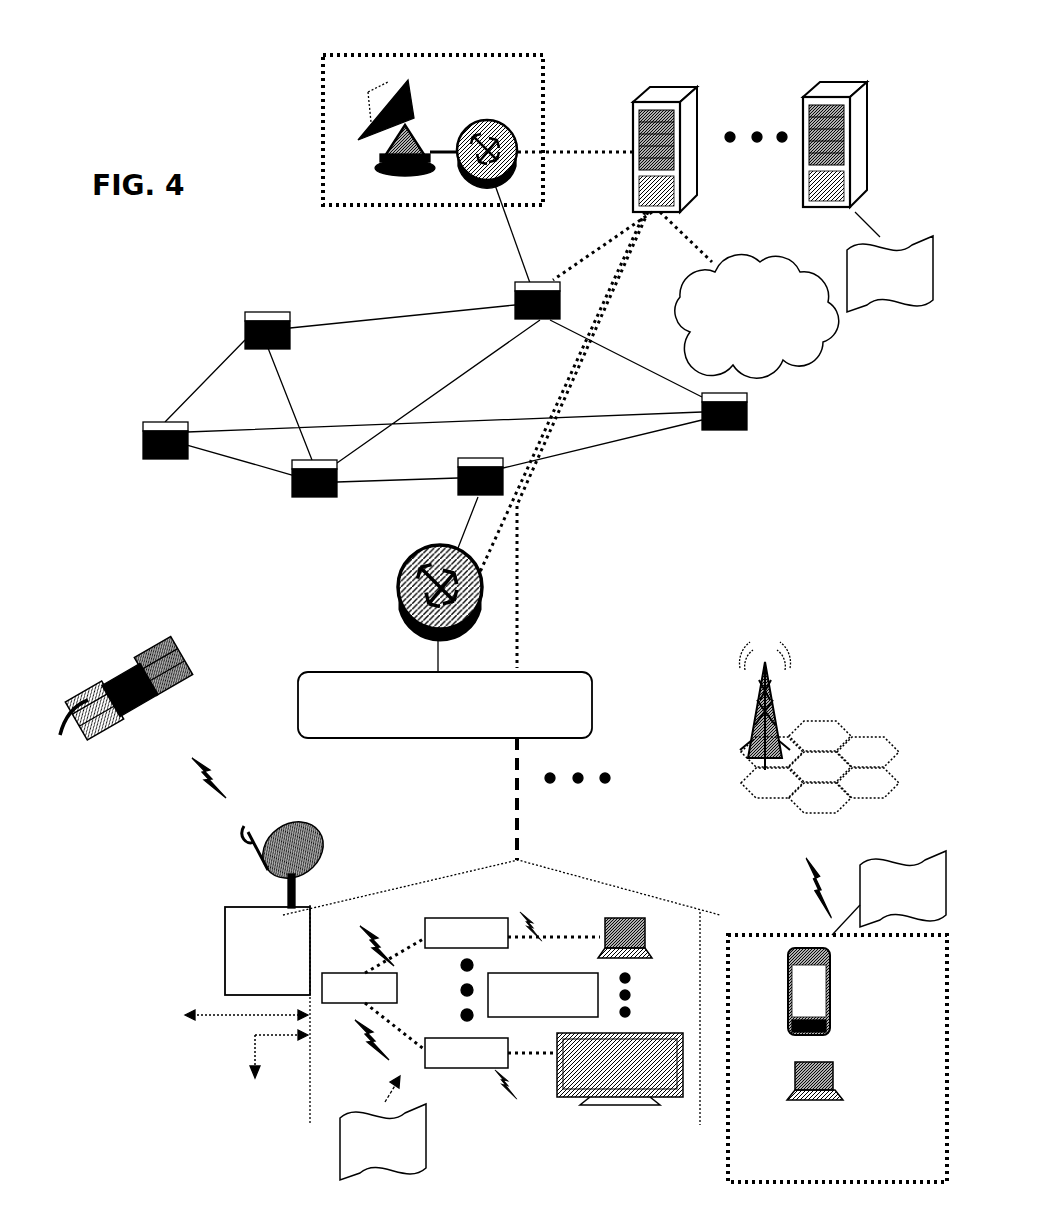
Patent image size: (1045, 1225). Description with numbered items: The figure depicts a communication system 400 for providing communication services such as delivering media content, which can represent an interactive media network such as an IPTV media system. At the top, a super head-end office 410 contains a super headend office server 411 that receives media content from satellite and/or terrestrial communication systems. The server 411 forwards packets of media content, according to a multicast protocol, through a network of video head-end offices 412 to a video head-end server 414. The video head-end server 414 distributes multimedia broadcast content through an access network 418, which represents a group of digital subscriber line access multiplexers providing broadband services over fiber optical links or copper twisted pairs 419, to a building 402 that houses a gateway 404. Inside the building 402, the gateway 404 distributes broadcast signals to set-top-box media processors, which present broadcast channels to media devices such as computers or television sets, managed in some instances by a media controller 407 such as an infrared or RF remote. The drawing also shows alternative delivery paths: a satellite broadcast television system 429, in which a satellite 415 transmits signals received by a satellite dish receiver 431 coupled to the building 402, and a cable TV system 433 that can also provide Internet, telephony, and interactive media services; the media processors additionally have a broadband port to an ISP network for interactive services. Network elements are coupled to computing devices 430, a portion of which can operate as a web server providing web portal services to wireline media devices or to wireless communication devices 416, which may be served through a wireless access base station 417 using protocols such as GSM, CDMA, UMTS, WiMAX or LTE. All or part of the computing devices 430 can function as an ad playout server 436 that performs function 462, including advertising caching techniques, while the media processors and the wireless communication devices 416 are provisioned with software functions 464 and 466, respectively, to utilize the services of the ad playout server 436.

The communication system 400 is at (157, 152).
The building 402 is at (518, 1144).
The gateway 404 is at (390, 999).
The media controller 407 is at (588, 1006).
The super head-end office 410 is at (322, 140).
The super headend office server 411 is at (462, 130).
The video head-end office 412 is at (143, 442).
The video head-end server 414 is at (398, 593).
The satellite 415 is at (112, 703).
The wireless communication device 416 is at (840, 965).
The wireless access base station 417 is at (818, 727).
The access network 418 is at (592, 698).
The fiber optical links or copper twisted pairs 419 is at (517, 830).
The satellite broadcast television system 429 is at (218, 742).
The computing device 430 is at (842, 78).
The ad playout server 436 is at (750, 147).
The satellite dish receiver 431 is at (207, 911).
The cable TV system 433 is at (234, 1142).
The function 462 is at (903, 286).
The software function 464 is at (393, 1156).
The software function 466 is at (915, 901).